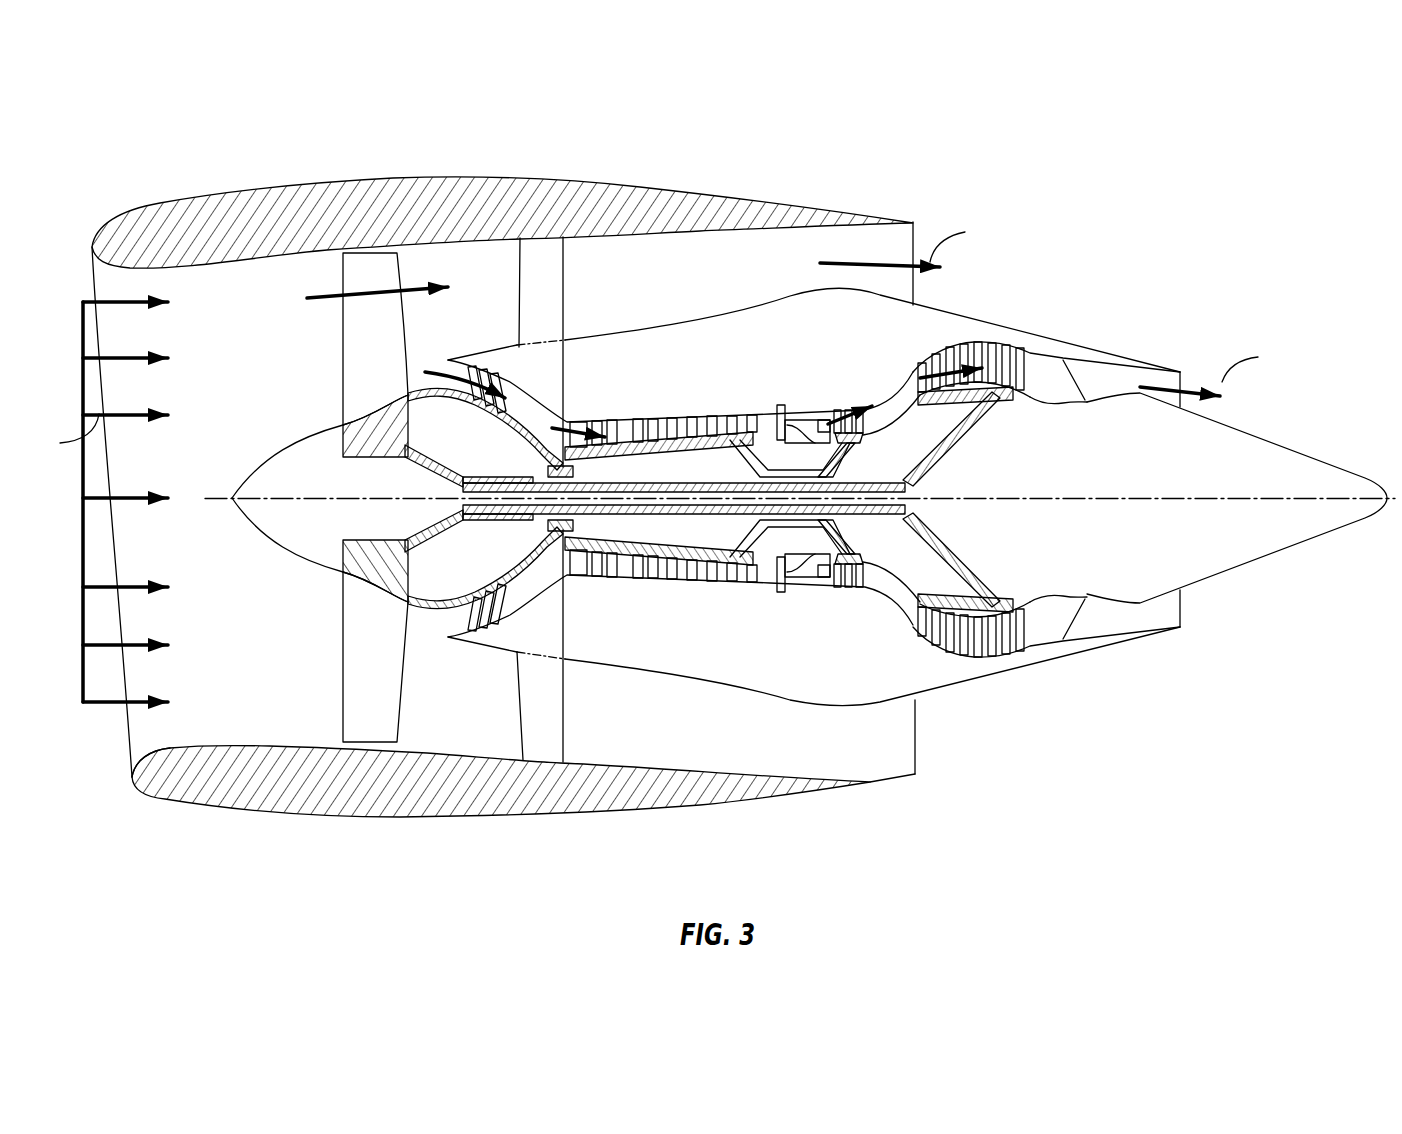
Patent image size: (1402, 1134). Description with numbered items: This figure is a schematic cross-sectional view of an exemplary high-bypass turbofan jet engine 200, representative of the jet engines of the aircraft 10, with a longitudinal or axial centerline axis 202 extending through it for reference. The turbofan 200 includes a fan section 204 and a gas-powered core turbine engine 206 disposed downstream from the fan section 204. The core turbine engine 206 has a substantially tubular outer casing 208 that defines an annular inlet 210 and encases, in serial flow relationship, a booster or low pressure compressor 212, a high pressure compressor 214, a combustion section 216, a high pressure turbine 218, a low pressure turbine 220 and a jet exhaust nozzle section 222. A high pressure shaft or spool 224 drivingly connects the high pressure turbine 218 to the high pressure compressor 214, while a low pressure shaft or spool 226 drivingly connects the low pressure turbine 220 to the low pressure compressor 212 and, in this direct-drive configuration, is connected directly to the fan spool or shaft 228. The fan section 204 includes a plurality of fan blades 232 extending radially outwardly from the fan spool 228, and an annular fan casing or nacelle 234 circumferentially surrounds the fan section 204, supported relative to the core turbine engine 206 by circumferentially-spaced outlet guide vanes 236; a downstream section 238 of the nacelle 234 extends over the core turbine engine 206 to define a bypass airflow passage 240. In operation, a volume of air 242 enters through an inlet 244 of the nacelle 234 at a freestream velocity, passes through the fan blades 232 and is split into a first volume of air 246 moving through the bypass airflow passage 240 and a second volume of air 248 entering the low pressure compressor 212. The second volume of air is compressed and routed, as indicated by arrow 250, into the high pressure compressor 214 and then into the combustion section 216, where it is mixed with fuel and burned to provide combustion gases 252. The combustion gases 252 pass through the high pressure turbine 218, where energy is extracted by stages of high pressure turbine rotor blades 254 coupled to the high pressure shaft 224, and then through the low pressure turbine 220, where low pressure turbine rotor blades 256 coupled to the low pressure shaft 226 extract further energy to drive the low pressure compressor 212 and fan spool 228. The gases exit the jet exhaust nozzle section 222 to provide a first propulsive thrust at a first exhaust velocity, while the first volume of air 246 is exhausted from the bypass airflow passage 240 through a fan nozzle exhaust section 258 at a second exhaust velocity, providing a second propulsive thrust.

The gas turbine engine 10 is at (1083, 208).
The high-bypass turbofan jet engine 200 is at (388, 156).
The longitudinal or axial centerline axis 202 is at (1122, 497).
The fan section 204 is at (328, 610).
The core turbine engine 206 is at (750, 378).
The outer casing 208 is at (752, 692).
The annular inlet 210 is at (452, 628).
The booster or low pressure (LP) compressor 212 is at (517, 594).
The high pressure (HP) compressor 214 is at (601, 579).
The combustion section 216 is at (796, 596).
The high pressure (HP) turbine 218 is at (845, 601).
The low pressure (LP) turbine 220 is at (1018, 664).
The jet exhaust nozzle section 222 is at (1182, 380).
The high pressure (HP) shaft or spool 224 is at (855, 450).
The low pressure (LP) shaft or spool 226 is at (527, 480).
The fan spool or shaft 228 is at (405, 458).
The fan blades 232 is at (343, 680).
The annular fan casing or nacelle 234 is at (390, 820).
The outlet guide vanes 236 is at (566, 290).
The downstream section of the nacelle 238 is at (862, 796).
The bypass airflow passage 240 is at (733, 281).
The volume of air 242 is at (90, 500).
The inlet 244 is at (130, 752).
The first volume of air 246 is at (342, 290).
The second volume of air 248 is at (445, 352).
The second volume of air routed to HP compressor 250 is at (588, 418).
The combustion gases 252 is at (965, 350).
The HP turbine rotor blades 254 is at (862, 576).
The LP turbine rotor blades 256 is at (990, 642).
The fan nozzle exhaust section 258 is at (908, 238).